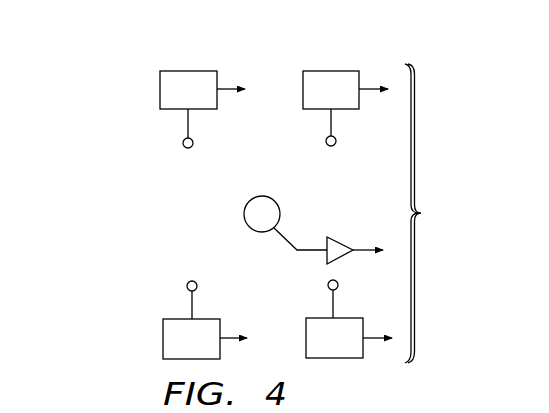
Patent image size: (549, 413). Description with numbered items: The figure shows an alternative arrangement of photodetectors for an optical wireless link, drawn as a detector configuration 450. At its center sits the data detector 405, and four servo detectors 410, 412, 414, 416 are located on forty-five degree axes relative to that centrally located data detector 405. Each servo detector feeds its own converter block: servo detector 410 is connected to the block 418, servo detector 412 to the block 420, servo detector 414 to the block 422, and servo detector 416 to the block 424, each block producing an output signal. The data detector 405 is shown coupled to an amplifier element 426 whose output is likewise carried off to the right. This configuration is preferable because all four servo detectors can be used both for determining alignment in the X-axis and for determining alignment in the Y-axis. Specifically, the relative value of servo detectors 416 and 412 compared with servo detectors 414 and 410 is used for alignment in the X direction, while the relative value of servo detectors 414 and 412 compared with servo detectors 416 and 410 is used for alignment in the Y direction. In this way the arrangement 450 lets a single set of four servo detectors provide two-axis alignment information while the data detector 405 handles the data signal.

The data detector 405 is at (244, 213).
The servo detector 410 is at (187, 287).
The servo detector 412 is at (336, 140).
The servo detector 414 is at (183, 143).
The servo detector 416 is at (338, 287).
The analog-to-digital converter 418 is at (163, 340).
The analog-to-digital converter 420 is at (330, 71).
The analog-to-digital converter 422 is at (160, 93).
The analog-to-digital converter 424 is at (335, 358).
The amplifier 426 is at (343, 241).
The receiver circuit 450 is at (112, 200).